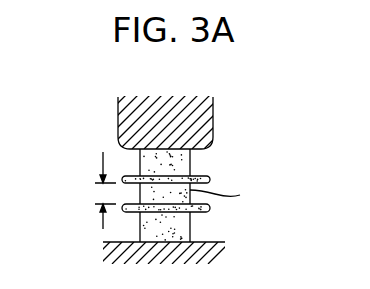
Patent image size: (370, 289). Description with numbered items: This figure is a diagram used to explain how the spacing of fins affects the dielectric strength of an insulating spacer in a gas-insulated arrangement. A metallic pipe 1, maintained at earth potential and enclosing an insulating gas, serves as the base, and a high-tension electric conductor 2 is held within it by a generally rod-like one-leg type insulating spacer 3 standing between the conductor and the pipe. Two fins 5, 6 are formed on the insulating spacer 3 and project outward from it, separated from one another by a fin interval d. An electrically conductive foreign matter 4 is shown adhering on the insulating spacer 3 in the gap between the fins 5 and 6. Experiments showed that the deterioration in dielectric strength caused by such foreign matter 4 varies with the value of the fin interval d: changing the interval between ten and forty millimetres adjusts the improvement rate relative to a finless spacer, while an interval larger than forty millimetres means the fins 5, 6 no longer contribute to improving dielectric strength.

The metallic pipe 1 is at (110, 241).
The high-tension electric conductor 2 is at (118, 117).
The insulating spacer 3 is at (140, 160).
The electrically conductive foreign matter 4 is at (222, 195).
The fin 5 is at (210, 179).
The fin 6 is at (210, 209).
The fin interval d is at (106, 198).